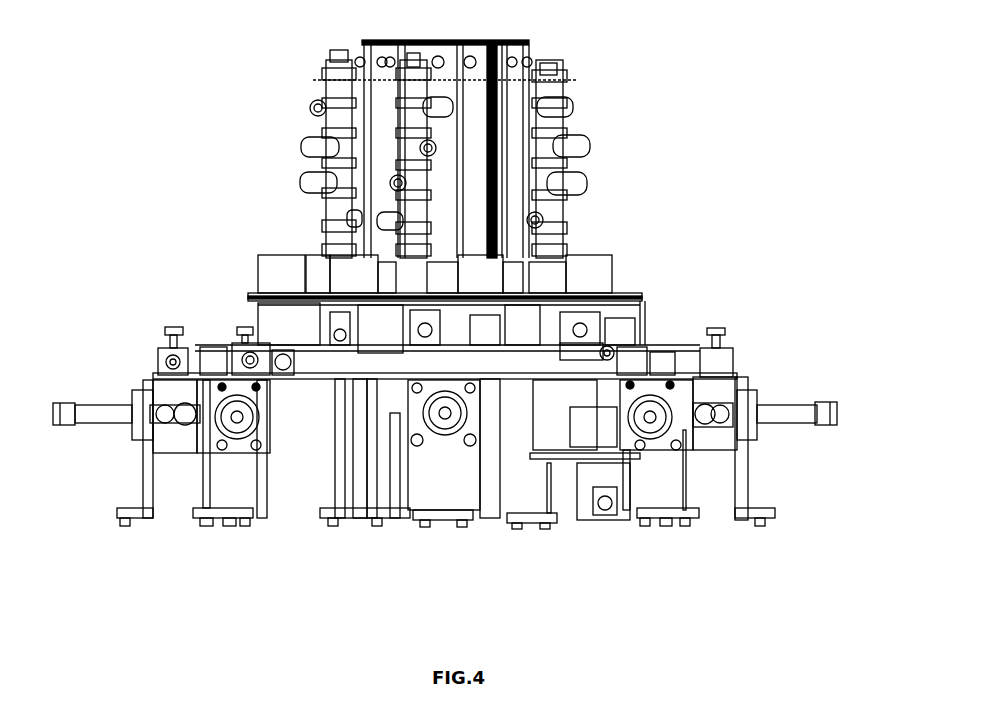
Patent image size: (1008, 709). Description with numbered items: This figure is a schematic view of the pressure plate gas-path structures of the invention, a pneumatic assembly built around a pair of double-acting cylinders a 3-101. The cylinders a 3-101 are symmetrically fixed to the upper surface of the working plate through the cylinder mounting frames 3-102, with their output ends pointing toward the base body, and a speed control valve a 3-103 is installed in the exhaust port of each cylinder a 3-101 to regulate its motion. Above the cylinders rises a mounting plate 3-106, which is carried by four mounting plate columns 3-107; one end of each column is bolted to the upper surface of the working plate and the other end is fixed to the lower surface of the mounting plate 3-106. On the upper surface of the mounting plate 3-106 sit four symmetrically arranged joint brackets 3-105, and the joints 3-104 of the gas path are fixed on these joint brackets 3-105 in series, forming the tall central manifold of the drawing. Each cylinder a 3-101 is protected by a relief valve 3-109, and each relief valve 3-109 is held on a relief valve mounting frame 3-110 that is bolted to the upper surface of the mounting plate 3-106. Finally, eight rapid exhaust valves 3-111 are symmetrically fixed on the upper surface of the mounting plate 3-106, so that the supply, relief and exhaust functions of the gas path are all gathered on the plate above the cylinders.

The cylinder a 3-101 is at (790, 417).
The cylinder mounting frame 3-102 is at (740, 450).
The speed control valve a 3-103 is at (733, 350).
The joint 3-104 is at (583, 183).
The joint bracket 3-105 is at (507, 102).
The mounting plate 3-106 is at (503, 392).
The mounting plate column 3-107 is at (352, 425).
The relief valve 3-109 is at (275, 270).
The relief valve mounting frame 3-110 is at (360, 353).
The rapid exhaust valve 3-111 is at (248, 333).